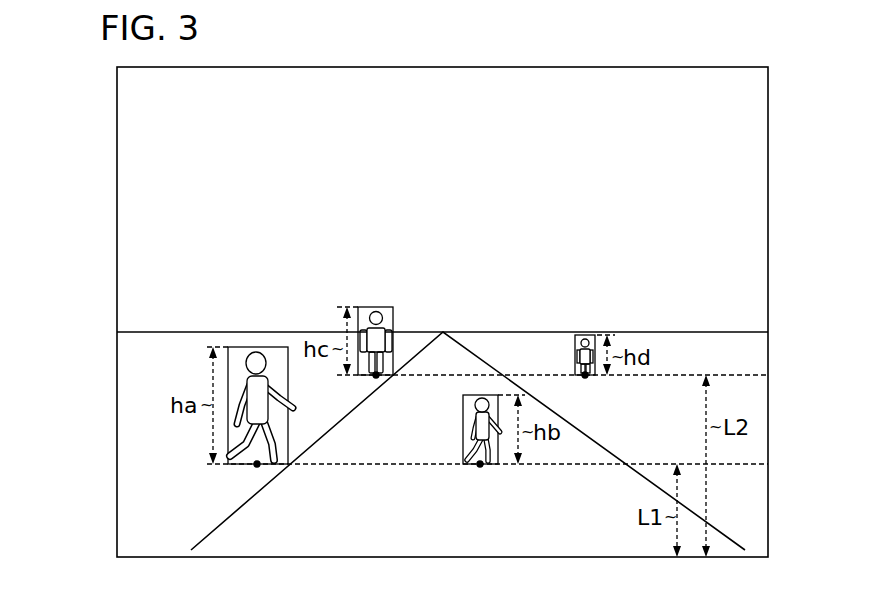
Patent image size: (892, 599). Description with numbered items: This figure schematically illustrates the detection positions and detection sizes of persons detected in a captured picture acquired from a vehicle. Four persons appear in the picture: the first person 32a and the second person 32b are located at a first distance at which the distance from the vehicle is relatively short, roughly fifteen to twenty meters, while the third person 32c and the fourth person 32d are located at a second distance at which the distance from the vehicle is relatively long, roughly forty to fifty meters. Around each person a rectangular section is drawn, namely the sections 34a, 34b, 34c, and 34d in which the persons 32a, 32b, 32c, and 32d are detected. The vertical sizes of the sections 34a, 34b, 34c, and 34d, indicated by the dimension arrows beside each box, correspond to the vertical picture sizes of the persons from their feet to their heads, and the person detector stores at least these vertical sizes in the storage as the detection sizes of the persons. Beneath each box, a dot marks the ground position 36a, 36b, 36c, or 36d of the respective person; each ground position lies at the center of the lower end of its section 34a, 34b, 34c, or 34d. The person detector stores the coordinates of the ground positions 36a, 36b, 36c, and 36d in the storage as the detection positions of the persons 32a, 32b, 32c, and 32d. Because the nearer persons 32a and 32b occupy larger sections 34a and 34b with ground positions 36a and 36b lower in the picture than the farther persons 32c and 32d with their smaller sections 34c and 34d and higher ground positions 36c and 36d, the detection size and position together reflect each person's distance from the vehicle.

The first person 32a is at (258, 351).
The second person 32b is at (482, 396).
The third person 32c is at (378, 311).
The fourth person 32d is at (588, 338).
The section 34a is at (232, 346).
The section 34b is at (463, 451).
The section 34c is at (361, 306).
The section 34d is at (576, 334).
The ground position 36a is at (258, 467).
The ground position 36b is at (481, 467).
The ground position 36c is at (377, 378).
The ground position 36d is at (586, 378).